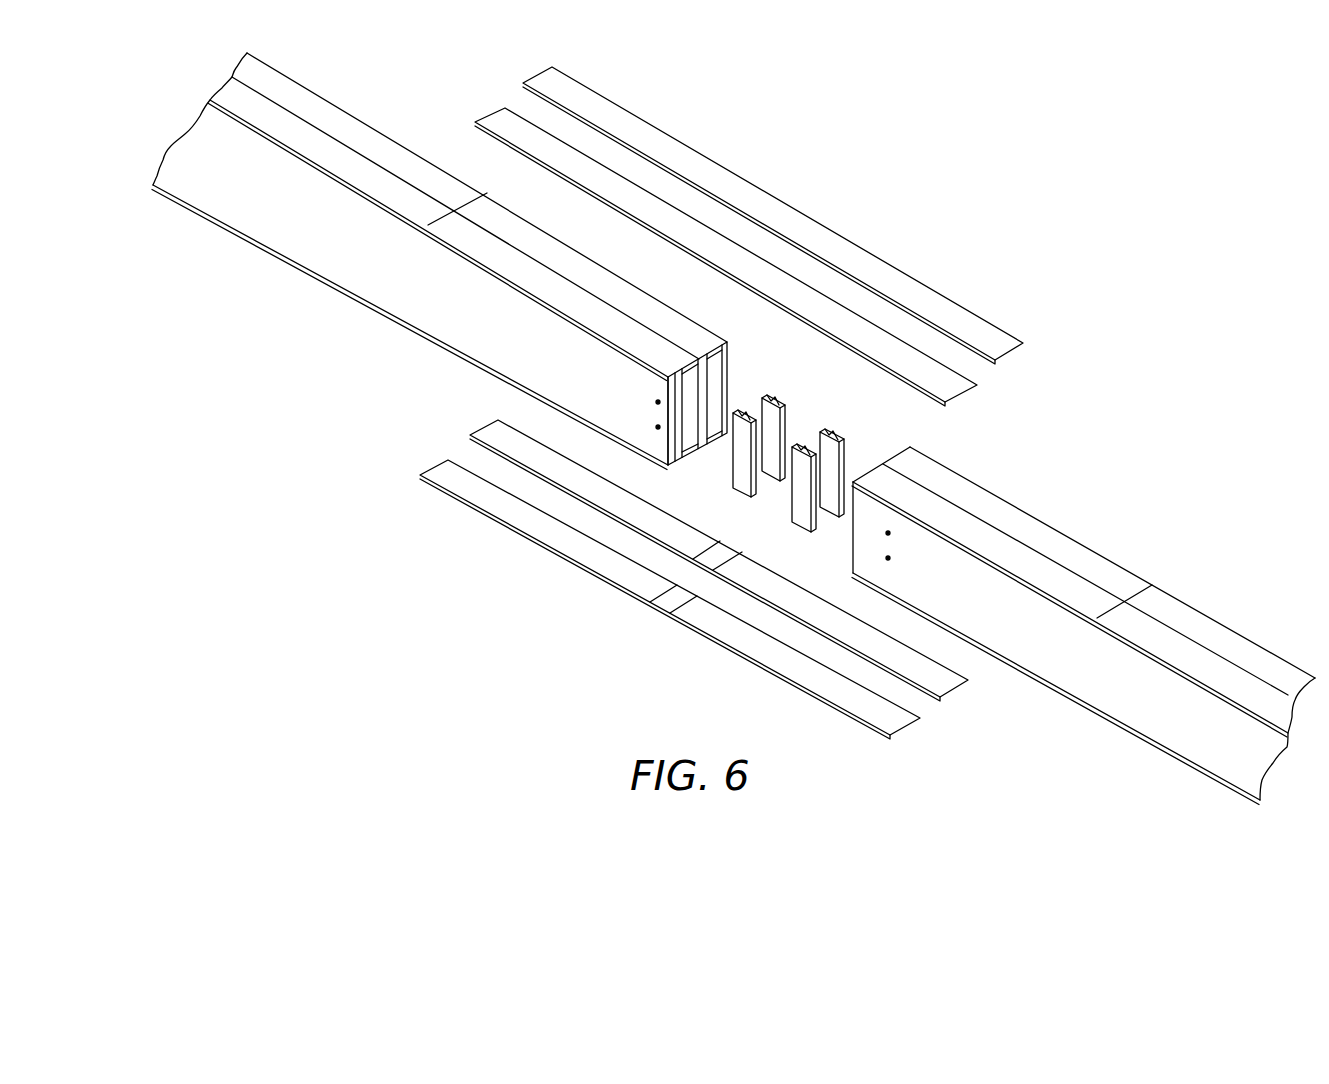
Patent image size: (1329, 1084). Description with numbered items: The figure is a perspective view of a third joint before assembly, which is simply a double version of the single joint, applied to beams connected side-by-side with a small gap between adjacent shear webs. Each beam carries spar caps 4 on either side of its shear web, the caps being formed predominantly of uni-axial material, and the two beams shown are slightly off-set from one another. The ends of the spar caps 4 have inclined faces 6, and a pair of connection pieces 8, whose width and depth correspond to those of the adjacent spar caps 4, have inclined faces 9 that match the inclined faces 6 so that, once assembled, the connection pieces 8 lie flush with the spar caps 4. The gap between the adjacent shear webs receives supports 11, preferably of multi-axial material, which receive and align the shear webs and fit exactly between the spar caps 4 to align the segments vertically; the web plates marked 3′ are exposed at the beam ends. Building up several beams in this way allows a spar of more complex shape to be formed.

The web plate 3′ is at (717, 380).
The spar cap 4 is at (273, 80).
The inclined face of spar cap 6 is at (623, 290).
The connection piece 8 is at (740, 187).
The inclined face of connection piece 9 is at (537, 93).
The support 11 is at (787, 417).